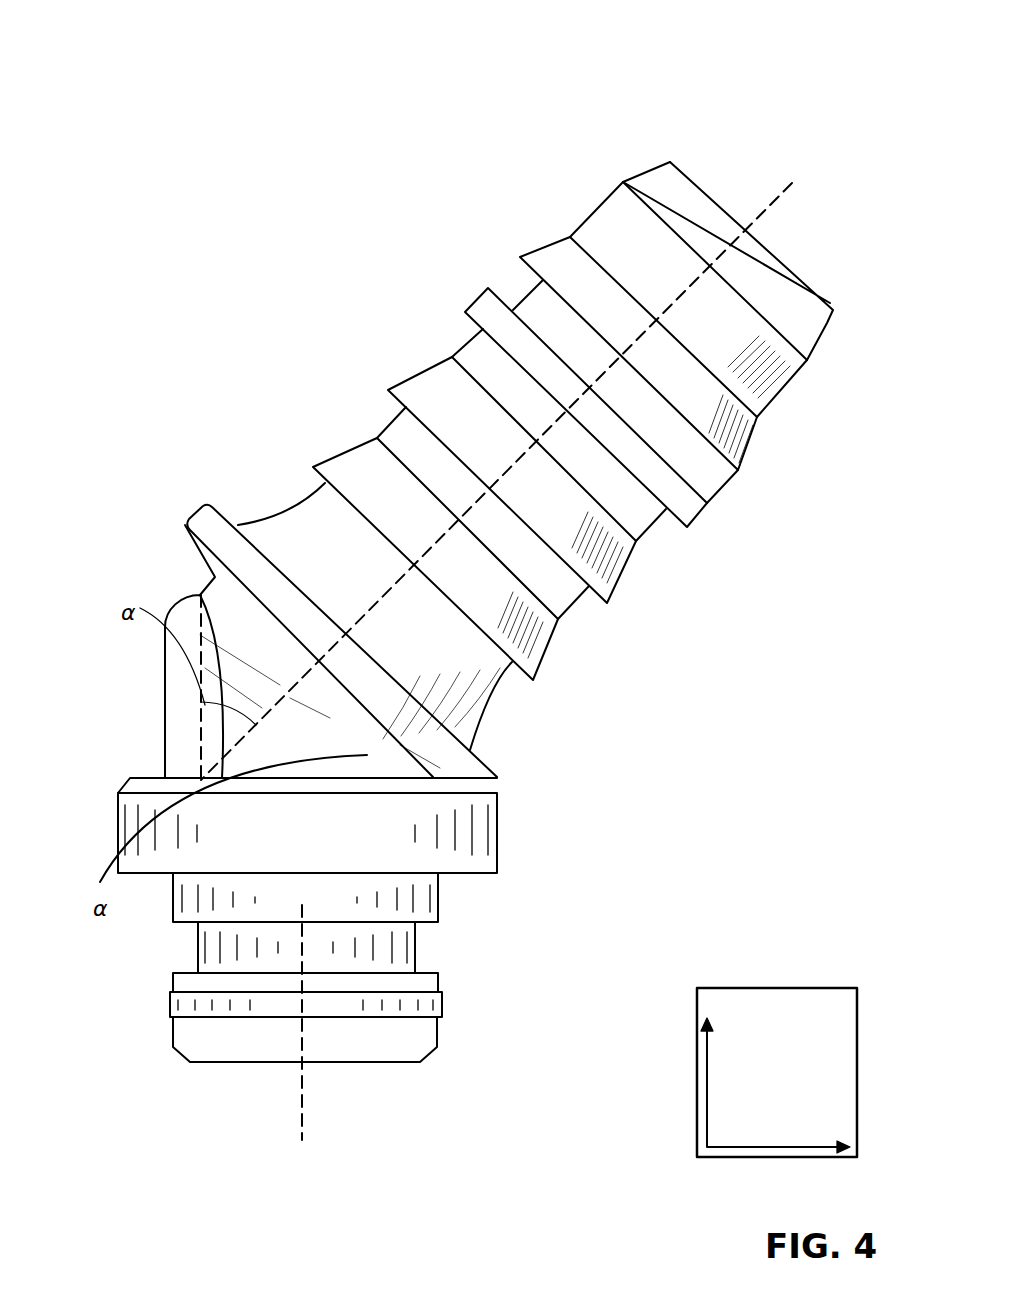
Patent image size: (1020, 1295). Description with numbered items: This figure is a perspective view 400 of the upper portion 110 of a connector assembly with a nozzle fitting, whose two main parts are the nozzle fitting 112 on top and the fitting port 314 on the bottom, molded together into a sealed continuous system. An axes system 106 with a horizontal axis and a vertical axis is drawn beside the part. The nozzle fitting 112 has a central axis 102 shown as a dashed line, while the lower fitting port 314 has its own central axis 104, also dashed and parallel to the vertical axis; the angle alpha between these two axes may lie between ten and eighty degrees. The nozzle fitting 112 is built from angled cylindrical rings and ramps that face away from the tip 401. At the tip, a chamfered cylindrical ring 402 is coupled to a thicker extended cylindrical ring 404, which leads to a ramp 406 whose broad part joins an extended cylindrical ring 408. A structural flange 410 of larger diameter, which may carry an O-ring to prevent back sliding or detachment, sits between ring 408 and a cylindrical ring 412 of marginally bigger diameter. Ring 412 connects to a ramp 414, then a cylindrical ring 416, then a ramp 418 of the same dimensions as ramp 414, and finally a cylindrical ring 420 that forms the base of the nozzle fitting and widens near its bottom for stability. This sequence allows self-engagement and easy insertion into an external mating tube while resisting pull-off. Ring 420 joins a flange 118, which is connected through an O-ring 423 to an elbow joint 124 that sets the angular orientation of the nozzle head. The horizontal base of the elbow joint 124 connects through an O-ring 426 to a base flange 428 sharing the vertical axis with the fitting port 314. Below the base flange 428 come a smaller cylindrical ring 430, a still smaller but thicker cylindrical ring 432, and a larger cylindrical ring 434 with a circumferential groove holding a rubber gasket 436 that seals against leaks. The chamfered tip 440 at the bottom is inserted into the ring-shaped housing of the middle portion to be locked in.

The perspective view 400 is at (748, 40).
The upper portion 110 is at (752, 90).
The central axis 102 is at (768, 214).
The central axis 104 is at (308, 1118).
The axes system 106 is at (732, 987).
The nozzle fitting 112 is at (572, 708).
The fitting port 314 is at (518, 1028).
The tip 401 is at (720, 197).
The chamfered cylindrical ring 402 is at (663, 160).
The extended cylindrical ring 404 is at (600, 202).
The ramp 406 is at (542, 242).
The extended cylindrical ring 408 is at (700, 467).
The structural flange 410 is at (480, 293).
The cylindrical ring 412 is at (647, 530).
The ramp 414 is at (418, 372).
The cylindrical ring 416 is at (570, 610).
The ramp 418 is at (345, 452).
The cylindrical ring 420 is at (487, 705).
The flange 118 is at (205, 503).
The O-ring 423 is at (215, 577).
The elbow joint 124 is at (165, 630).
The O-ring 426 is at (135, 778).
The base flange 428 is at (497, 832).
The cylindrical ring 430 is at (438, 902).
The cylindrical ring 432 is at (198, 962).
The cylindrical ring 434 is at (440, 975).
The rubber gasket 436 is at (442, 1002).
The tip 440 is at (385, 1062).